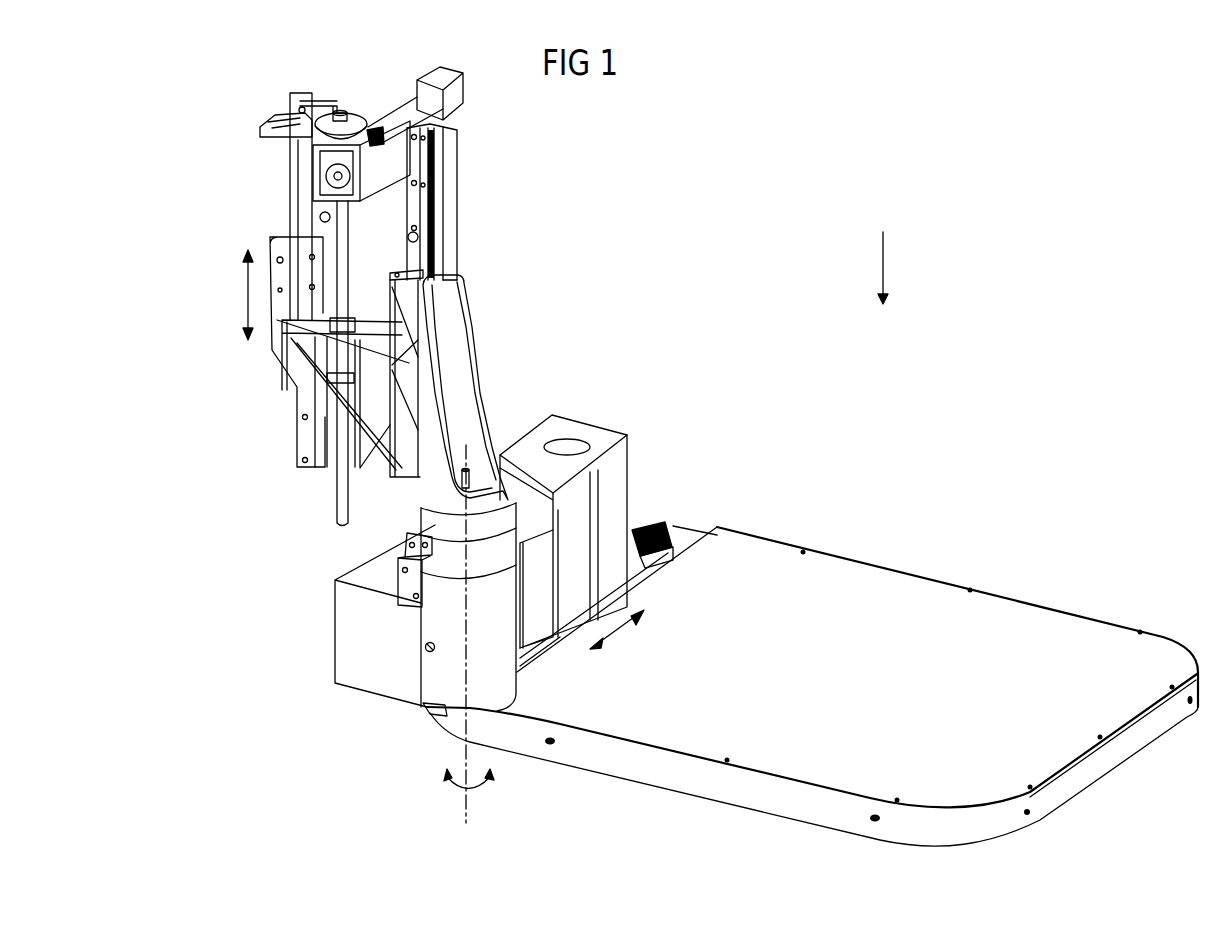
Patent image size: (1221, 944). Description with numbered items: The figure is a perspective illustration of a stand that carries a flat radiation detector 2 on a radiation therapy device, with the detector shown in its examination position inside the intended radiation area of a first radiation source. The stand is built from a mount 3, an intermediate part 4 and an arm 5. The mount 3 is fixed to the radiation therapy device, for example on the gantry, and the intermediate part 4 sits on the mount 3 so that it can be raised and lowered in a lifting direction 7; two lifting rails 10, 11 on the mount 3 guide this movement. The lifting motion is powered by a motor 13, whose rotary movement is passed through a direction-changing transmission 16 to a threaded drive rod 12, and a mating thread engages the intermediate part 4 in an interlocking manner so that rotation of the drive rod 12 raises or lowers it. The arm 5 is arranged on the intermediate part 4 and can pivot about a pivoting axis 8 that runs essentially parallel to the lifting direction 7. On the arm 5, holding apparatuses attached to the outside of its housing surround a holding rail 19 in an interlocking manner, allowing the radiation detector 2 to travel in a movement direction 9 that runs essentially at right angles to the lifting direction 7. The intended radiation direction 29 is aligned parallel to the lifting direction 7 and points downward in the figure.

The flat radiation detector 2 is at (893, 587).
The mount 3 is at (444, 224).
The intermediate part 4 is at (462, 371).
The arm 5 is at (613, 477).
The lifting direction 7 is at (248, 293).
The pivoting axis 8 is at (466, 752).
The movement direction 9 is at (614, 632).
The lifting rail 10 is at (303, 213).
The lifting rail 11 is at (421, 163).
The drive rod 12 is at (343, 264).
The motor 13 is at (416, 108).
The direction-changing transmission 16 is at (354, 157).
The holding rail 19 is at (637, 518).
The intended radiation direction 29 is at (886, 258).